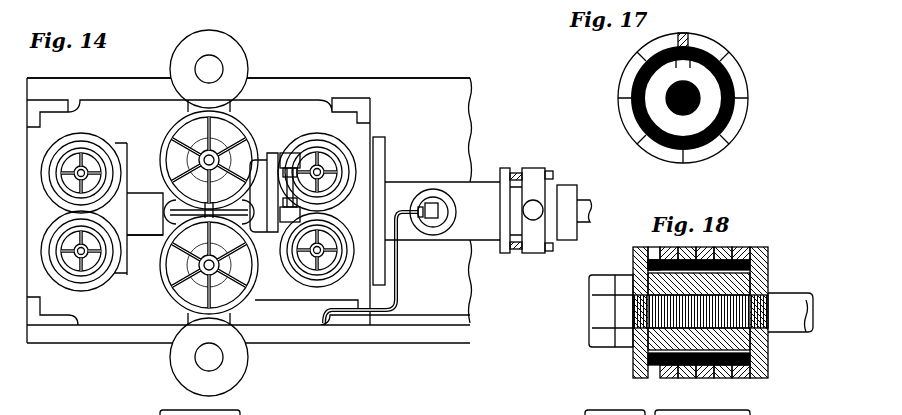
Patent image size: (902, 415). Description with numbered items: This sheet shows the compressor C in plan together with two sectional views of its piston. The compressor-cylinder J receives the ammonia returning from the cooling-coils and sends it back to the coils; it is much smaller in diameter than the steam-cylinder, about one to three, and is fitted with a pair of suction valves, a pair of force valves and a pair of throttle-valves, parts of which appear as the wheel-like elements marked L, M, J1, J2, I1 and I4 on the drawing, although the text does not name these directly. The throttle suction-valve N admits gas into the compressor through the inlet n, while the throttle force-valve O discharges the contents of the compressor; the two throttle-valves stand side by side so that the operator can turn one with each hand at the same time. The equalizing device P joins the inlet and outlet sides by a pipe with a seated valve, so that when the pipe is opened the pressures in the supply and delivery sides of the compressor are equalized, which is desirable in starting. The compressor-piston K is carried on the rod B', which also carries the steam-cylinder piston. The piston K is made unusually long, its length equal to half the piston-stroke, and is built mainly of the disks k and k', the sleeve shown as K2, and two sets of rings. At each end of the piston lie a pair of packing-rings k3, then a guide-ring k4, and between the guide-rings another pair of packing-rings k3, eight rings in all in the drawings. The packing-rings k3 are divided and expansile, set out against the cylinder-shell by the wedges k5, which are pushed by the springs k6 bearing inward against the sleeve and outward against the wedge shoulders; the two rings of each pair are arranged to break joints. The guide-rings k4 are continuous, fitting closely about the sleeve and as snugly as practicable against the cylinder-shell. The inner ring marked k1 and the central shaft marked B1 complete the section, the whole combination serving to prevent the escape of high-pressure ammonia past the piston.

In FIG. 14, the compressor C is at (248, 69).
In FIG. 14, the inlet n is at (209, 69).
In FIG. 14, the upper feed wheel L is at (200, 163).
In FIG. 14, the lower feed wheel M is at (197, 262).
In FIG. 14, the throttle suction-valve N is at (209, 159).
In FIG. 14, the throttle force-valve O is at (211, 265).
In FIG. 14, the compressor-cylinder J is at (386, 210).
In FIG. 14, the bracket J1 is at (139, 209).
In FIG. 14, the bracket J2 is at (145, 248).
In FIG. 14, the equalizing device P is at (275, 192).
In FIG. 14, the hand wheel I1 is at (444, 207).
In FIG. 14, the pipe I4 is at (378, 267).
In FIG. 14, the piston rod B' is at (561, 210).
In FIG. 17, the compressor-piston K is at (696, 98).
In FIG. 18, the compressor-piston K is at (684, 308).
In FIG. 17, the packing-rings k3 is at (637, 73).
In FIG. 18, the packing-rings k3 is at (655, 248).
In FIG. 17, the wedges k5 is at (683, 33).
In FIG. 17, the inner ring k1 is at (674, 74).
In FIG. 17, the springs k6 is at (688, 78).
In FIG. 17, the shaft B1 is at (670, 112).
In FIG. 18, the shaft B1 is at (770, 322).
In FIG. 18, the bearing sleeve K2 is at (752, 268).
In FIG. 18, the disk k is at (720, 299).
In FIG. 18, the guide-rings k4 is at (735, 390).
In FIG. 18, the disk k' is at (615, 365).